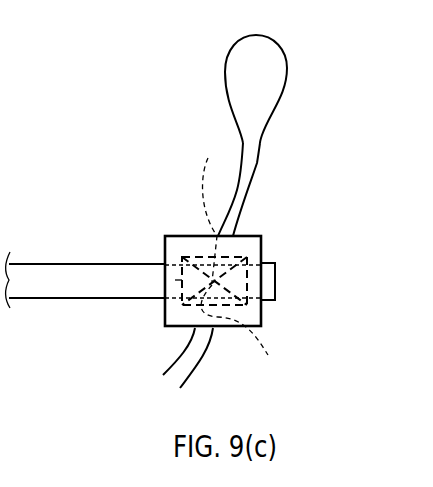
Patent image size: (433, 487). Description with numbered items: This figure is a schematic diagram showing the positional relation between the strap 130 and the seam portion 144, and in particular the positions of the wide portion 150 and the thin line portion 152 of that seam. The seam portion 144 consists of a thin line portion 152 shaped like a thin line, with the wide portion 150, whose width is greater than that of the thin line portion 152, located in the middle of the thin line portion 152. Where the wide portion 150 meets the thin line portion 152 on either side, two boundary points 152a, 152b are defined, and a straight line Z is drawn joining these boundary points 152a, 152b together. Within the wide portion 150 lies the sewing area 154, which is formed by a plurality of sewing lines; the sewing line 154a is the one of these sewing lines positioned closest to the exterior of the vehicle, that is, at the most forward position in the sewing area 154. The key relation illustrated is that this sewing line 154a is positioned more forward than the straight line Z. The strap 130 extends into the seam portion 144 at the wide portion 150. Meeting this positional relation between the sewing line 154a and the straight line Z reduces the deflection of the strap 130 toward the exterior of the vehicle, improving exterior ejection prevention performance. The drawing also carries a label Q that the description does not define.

The strap 130 is at (57, 264).
The seam portion 144 is at (279, 118).
The thin line portion 152 is at (266, 163).
The boundary point 152a is at (205, 207).
The boundary point 152b is at (192, 330).
The wide portion 150 is at (262, 240).
The sewing area 154 is at (192, 246).
The sewing line 154a is at (182, 280).
The port Q is at (221, 283).
The straight line Z is at (245, 329).